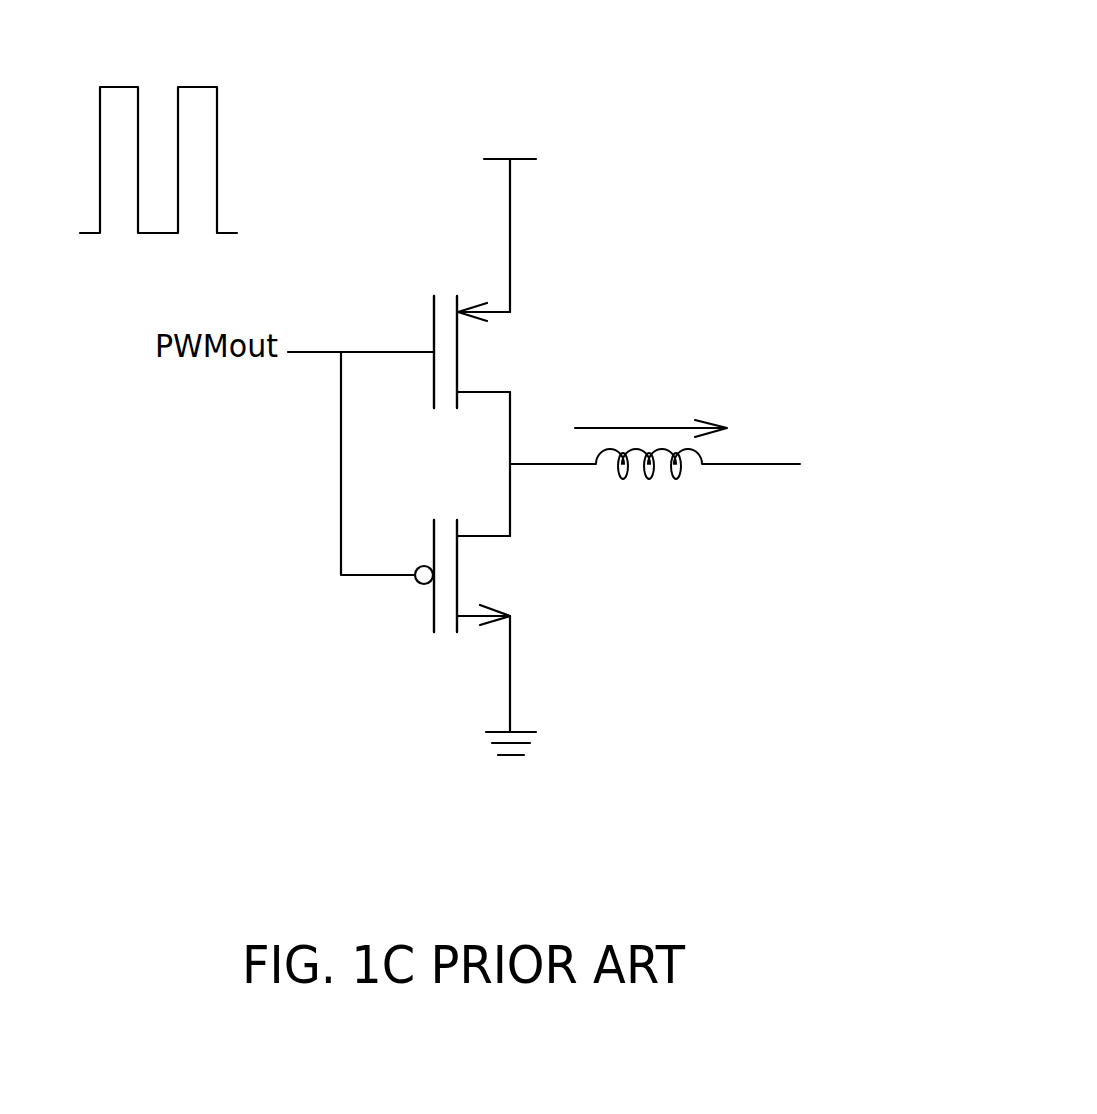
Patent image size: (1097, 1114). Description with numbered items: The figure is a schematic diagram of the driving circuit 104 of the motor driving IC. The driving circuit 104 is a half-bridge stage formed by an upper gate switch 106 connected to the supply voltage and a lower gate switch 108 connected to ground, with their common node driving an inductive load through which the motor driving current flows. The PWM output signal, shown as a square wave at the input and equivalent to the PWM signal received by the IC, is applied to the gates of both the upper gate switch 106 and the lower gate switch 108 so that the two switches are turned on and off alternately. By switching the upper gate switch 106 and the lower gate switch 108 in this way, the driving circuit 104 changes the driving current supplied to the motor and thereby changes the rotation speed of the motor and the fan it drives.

The driving circuit 104 is at (701, 102).
The upper gate switch 106 is at (522, 343).
The lower gate switch 108 is at (523, 585).